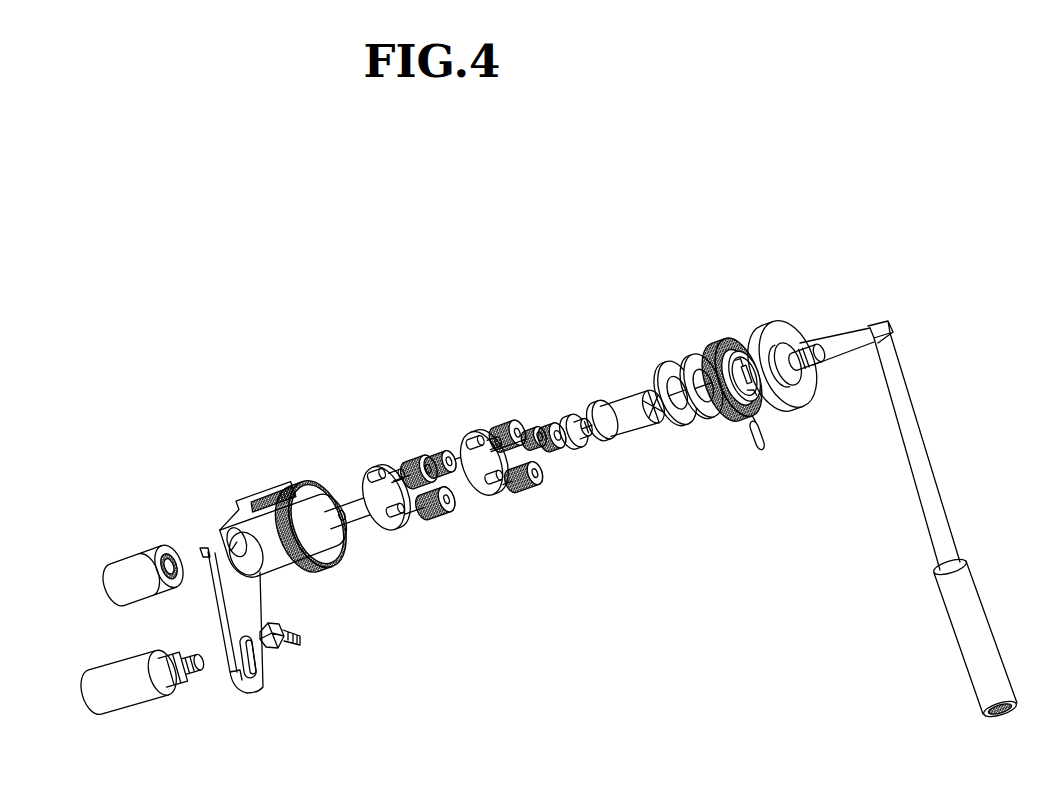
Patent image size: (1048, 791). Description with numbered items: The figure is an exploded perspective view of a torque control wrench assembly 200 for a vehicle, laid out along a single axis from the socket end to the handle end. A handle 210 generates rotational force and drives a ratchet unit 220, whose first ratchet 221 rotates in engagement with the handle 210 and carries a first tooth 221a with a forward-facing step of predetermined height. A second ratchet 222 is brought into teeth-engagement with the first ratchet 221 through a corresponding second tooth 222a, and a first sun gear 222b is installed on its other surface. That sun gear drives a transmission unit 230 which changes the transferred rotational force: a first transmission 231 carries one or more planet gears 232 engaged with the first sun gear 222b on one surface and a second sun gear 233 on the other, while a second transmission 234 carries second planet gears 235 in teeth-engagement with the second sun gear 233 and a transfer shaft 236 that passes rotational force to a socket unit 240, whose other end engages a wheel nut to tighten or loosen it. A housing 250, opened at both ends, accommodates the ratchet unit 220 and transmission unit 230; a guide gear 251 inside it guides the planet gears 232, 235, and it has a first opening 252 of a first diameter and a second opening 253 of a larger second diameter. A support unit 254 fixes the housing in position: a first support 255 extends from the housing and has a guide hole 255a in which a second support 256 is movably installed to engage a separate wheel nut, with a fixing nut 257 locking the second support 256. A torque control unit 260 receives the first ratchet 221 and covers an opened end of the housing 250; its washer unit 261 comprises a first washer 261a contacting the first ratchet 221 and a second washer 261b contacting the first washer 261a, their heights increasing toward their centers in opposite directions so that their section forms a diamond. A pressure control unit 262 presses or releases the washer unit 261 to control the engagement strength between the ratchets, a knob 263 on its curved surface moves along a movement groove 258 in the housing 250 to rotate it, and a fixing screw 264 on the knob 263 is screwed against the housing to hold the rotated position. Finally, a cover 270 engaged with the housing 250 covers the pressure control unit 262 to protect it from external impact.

The torque control wrench assembly 200 is at (492, 270).
The handle 210 is at (968, 652).
The ratchet unit 220 is at (613, 480).
The first ratchet 221 is at (636, 464).
The first tooth 221a is at (633, 420).
The second ratchet 222 is at (586, 478).
The second tooth 222a is at (583, 425).
The first sun gear 222b is at (560, 442).
The transmission unit 230 is at (456, 504).
The first transmission 231 is at (497, 478).
The planet gears 232 is at (528, 495).
The second sun gear 233 is at (465, 494).
The second transmission 234 is at (396, 512).
The second planet gears 235 is at (442, 518).
The transfer shaft 236 is at (377, 512).
The socket unit 240 is at (118, 590).
The housing 250 is at (276, 535).
The guide gear 251 is at (266, 495).
The first opening 252 is at (242, 548).
The second opening 253 is at (306, 498).
The support unit 254 is at (200, 669).
The first support 255 is at (232, 675).
The guide hole 255a is at (252, 672).
The second support 256 is at (144, 706).
The fixing nut 257 is at (280, 650).
The movement groove 258 is at (318, 557).
The torque control unit 260 is at (747, 458).
The washer unit 261 is at (719, 442).
The first washer 261a is at (710, 414).
The second washer 261b is at (744, 448).
The pressure control unit 262 is at (772, 412).
The knob 263 is at (765, 402).
The fixing screw 264 is at (757, 406).
The cover 270 is at (790, 333).